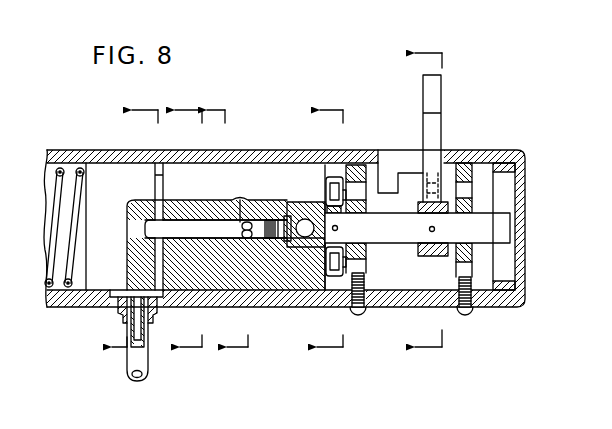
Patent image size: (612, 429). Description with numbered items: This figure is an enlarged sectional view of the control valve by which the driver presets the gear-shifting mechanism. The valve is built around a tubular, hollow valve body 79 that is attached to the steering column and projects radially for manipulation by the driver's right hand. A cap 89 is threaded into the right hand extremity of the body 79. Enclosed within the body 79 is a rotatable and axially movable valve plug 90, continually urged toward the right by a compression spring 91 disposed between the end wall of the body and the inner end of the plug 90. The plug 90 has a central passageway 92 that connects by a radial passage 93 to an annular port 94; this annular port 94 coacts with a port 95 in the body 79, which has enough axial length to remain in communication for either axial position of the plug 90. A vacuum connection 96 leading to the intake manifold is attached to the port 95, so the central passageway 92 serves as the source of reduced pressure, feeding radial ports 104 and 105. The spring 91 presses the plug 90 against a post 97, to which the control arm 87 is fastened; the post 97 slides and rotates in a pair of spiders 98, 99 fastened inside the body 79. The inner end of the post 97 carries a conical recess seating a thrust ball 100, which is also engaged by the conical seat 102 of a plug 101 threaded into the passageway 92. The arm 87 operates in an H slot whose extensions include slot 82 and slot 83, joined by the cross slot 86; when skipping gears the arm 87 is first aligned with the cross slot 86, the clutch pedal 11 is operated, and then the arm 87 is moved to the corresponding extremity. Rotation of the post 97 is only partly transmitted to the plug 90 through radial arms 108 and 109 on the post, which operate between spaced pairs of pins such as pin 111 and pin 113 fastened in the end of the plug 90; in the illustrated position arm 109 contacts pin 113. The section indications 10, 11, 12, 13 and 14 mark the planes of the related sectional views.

The section line 10- 10 is at (445, 203).
The clutch pedal 11 is at (342, 227).
The section line 12- 12 is at (238, 226).
The section line 13- 13 is at (198, 226).
The section line 14- 14 is at (141, 226).
The valve body 79 is at (70, 307).
The slot extension 82 is at (453, 145).
The slot extension 83 is at (387, 173).
The cross slot 86 is at (415, 148).
The control arm 87 is at (445, 128).
The cap 89 is at (527, 190).
The valve plug 90 is at (98, 177).
The compression spring 91 is at (47, 275).
The central passageway 92 is at (216, 230).
The radial passage 93 is at (158, 267).
The annular port 94 is at (158, 163).
The port 95 is at (117, 295).
The vacuum connection 96 is at (137, 373).
The post 97 is at (397, 237).
The spider 98 is at (370, 255).
The spider 99 is at (343, 223).
The thrust ball 100 is at (292, 203).
The plug 101 is at (272, 203).
The conical seat 102 is at (287, 203).
The radial port 104 is at (240, 200).
The radial port 105 is at (247, 240).
The radial arm 108 is at (327, 173).
The radial arm 109 is at (340, 280).
The pin 111 is at (325, 170).
The pin 113 is at (320, 265).